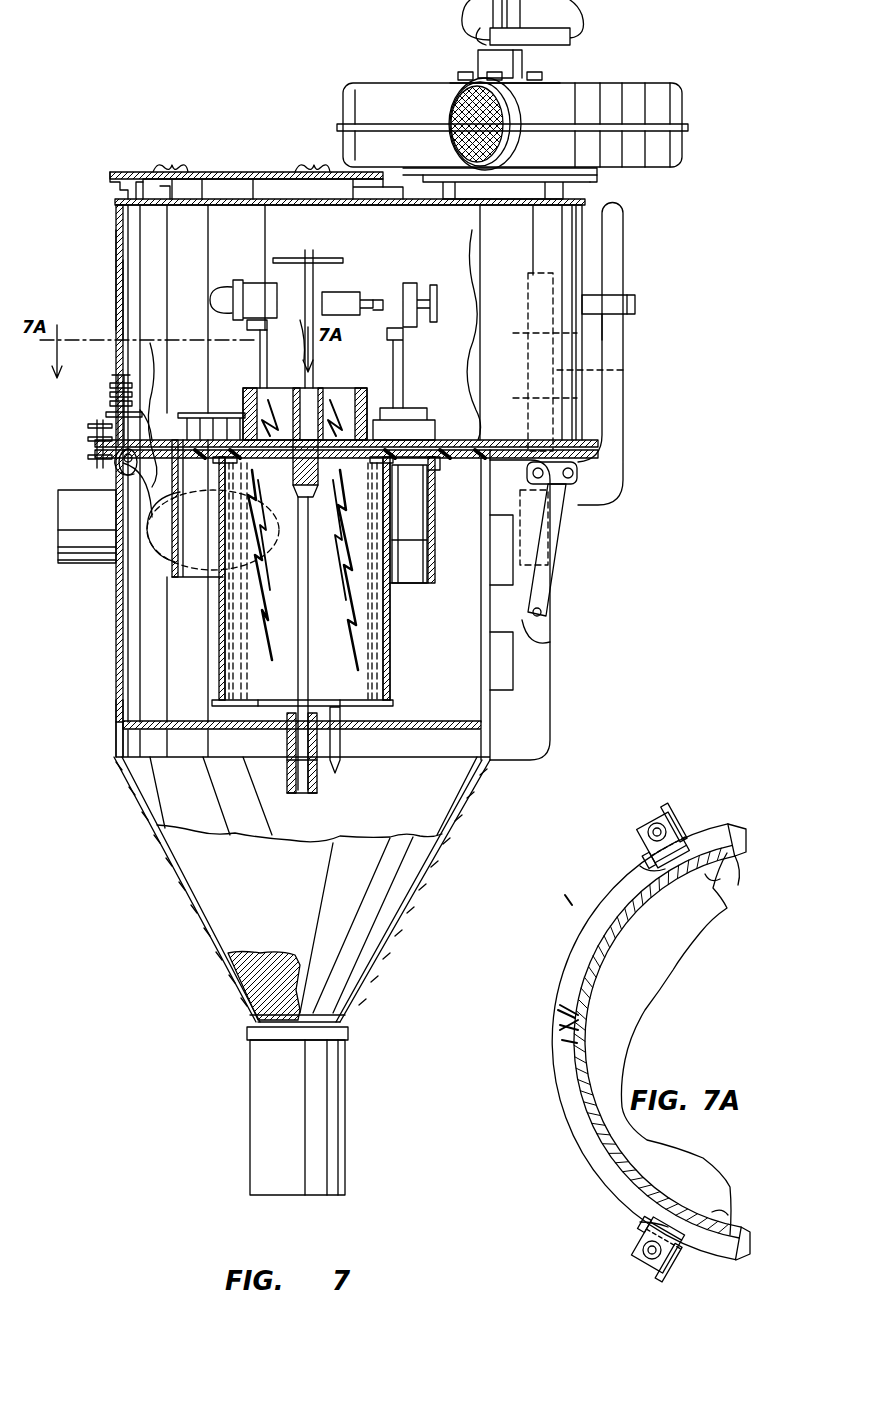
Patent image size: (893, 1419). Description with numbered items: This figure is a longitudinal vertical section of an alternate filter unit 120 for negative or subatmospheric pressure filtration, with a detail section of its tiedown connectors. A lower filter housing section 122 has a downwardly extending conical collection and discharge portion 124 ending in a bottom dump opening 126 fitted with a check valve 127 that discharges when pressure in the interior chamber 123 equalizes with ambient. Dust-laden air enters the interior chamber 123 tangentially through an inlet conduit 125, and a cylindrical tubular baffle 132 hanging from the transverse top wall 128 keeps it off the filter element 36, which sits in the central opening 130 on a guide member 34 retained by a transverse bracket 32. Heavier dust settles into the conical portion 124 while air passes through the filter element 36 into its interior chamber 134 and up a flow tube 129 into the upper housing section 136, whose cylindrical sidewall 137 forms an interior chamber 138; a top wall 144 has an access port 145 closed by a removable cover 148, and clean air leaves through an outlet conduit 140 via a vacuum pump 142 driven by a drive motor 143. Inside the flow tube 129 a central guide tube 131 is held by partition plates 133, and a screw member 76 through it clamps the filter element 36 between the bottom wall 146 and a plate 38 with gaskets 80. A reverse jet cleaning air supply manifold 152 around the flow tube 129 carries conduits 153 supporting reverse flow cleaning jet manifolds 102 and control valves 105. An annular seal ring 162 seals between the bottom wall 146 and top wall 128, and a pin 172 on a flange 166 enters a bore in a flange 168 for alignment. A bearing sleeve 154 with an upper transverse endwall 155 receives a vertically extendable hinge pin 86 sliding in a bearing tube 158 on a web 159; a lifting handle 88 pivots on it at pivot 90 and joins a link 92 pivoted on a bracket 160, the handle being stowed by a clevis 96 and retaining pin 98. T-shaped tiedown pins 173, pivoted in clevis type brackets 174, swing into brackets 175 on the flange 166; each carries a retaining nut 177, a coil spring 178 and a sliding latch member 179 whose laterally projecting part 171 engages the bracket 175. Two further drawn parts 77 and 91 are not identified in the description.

In FIG. 7, the transverse bracket 32 is at (424, 724).
In FIG. 7, the guide member 34 is at (392, 645).
In FIG. 7, the filter element 36 is at (393, 620).
In FIG. 7, the plate 38 is at (258, 778).
In FIG. 7, the screw member 76 is at (318, 258).
In FIG. 7, the shaft coupling 77 is at (305, 375).
In FIG. 7, the gaskets 80 is at (382, 484).
In FIG. 7, the hinge pin 86 is at (590, 442).
In FIG. 7, the lifting handle 88 is at (623, 264).
In FIG. 7, the pivot 90 is at (560, 522).
In FIG. 7, the pivot 91 is at (585, 476).
In FIG. 7, the link 92 is at (545, 588).
In FIG. 7, the clevis 96 is at (612, 333).
In FIG. 7, the retaining pin 98 is at (636, 303).
In FIG. 7, the reverse flow cleaning jet manifolds 102 is at (262, 290).
In FIG. 7, the control valves 105 is at (232, 296).
In FIG. 7, the filter unit 120 is at (104, 679).
In FIG. 7, the lower filter housing section 122 is at (116, 703).
In FIG. 7, the interior chamber 123 is at (200, 645).
In FIG. 7, the conical shaped material collection and discharge portion 124 is at (190, 905).
In FIG. 7, the inlet conduit 125 is at (90, 563).
In FIG. 7, the bottom dump opening 126 is at (272, 1008).
In FIG. 7, the check valve 127 is at (250, 1080).
In FIG. 7, the transverse top wall 128 is at (432, 498).
In FIG. 7, the flow tube 129 is at (320, 400).
In FIG. 7, the central opening 130 is at (432, 472).
In FIG. 7, the central guide tube 131 is at (328, 390).
In FIG. 7, the cylindrical tubular baffle 132 is at (432, 548).
In FIG. 7, the partition plates 133 is at (296, 450).
In FIG. 7, the interior chamber 134 is at (345, 560).
In FIG. 7, the upper housing section 136 is at (116, 256).
In FIG. 7A, the upper housing section 136 is at (571, 975).
In FIG. 7, the cylindrical sidewall 137 is at (123, 290).
In FIG. 7, the interior chamber 138 is at (347, 201).
In FIG. 7, the outlet conduit 140 is at (575, 195).
In FIG. 7, the vacuum pump 142 is at (640, 86).
In FIG. 7, the drive motor 143 is at (525, 68).
In FIG. 7, the top wall 144 is at (383, 200).
In FIG. 7, the access port 145 is at (162, 190).
In FIG. 7, the bottom wall 146 is at (450, 440).
In FIG. 7A, the bottom wall 146 is at (686, 966).
In FIG. 7, the removable cover 148 is at (262, 172).
In FIG. 7, the reverse jet filter cleaning air supply manifold 152 is at (418, 412).
In FIG. 7, the conduits 153 is at (262, 370).
In FIG. 7, the bearing sleeve 154 is at (611, 370).
In FIG. 7, the upper transverse endwall 155 is at (531, 352).
In FIG. 7, the bearing tube 158 is at (565, 545).
In FIG. 7, the web 159 is at (550, 715).
In FIG. 7, the bracket 160 is at (548, 640).
In FIG. 7, the annular seal ring 162 is at (476, 378).
In FIG. 7, the flange 166 is at (157, 418).
In FIG. 7A, the flange 166 is at (562, 1022).
In FIG. 7, the flange 168 is at (120, 505).
In FIG. 7A, the laterally projecting part 171 is at (717, 905).
In FIG. 7, the pin 172 is at (88, 440).
In FIG. 7, the T-shaped tiedown pins 173 is at (124, 378).
In FIG. 7A, the T-shaped tiedown pins 173 is at (655, 815).
In FIG. 7, the clevis type brackets 174 is at (118, 463).
In FIG. 7A, the clevis type brackets 174 is at (637, 835).
In FIG. 7, the brackets 175 is at (148, 400).
In FIG. 7A, the brackets 175 is at (640, 870).
In FIG. 7, the retaining nut 177 is at (118, 378).
In FIG. 7A, the retaining nut 177 is at (640, 850).
In FIG. 7, the coil spring 178 is at (110, 395).
In FIG. 7A, the coil spring 178 is at (658, 823).
In FIG. 7, the latch member 179 is at (106, 414).
In FIG. 7A, the latch member 179 is at (688, 818).